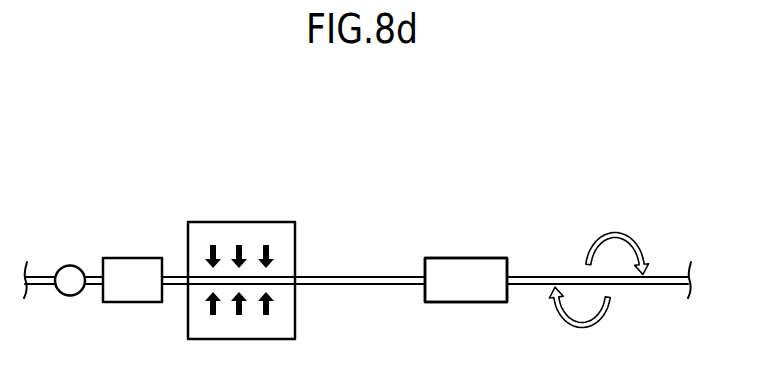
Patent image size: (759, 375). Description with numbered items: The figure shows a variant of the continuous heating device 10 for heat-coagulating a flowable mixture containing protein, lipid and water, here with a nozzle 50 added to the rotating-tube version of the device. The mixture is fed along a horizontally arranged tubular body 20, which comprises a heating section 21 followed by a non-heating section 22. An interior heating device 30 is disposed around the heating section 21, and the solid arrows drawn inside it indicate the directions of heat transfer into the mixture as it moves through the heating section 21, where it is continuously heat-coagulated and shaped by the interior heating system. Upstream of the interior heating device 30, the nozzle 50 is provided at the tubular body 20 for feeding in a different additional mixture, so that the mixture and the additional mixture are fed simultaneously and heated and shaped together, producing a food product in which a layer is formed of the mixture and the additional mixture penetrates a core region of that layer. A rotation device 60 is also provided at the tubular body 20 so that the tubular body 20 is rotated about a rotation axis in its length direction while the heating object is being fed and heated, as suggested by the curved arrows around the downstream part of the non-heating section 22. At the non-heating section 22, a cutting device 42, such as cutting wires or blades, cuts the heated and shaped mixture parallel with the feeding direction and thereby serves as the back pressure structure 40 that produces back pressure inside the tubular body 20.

The continuous heating device 10 is at (640, 135).
The tubular body 20 is at (398, 176).
The heating section 21 is at (280, 278).
The non-heating section 22 is at (365, 278).
The interior heating device 30 is at (205, 222).
The back pressure structure 40 is at (466, 280).
The cutting device 42 is at (475, 258).
The nozzle 50 is at (68, 264).
The rotation device 60 is at (128, 258).